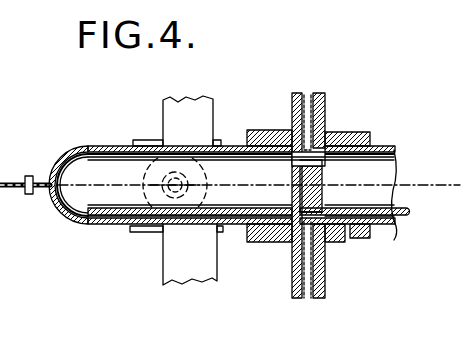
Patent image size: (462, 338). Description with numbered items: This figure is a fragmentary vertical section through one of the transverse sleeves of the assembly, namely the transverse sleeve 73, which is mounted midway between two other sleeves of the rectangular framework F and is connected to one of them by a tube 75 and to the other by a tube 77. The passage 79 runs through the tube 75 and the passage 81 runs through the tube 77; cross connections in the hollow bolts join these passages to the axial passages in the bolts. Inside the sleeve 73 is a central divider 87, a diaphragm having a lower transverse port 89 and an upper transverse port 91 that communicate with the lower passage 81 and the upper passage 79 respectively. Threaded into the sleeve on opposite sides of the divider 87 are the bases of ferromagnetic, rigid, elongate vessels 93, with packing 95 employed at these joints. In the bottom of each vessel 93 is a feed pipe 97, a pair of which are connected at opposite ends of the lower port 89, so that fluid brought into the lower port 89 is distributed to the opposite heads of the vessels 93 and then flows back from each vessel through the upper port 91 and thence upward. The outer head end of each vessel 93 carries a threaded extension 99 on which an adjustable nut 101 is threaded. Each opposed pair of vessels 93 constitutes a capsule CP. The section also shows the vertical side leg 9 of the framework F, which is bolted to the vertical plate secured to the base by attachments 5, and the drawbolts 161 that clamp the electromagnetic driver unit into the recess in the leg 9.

The attachments 5 is at (90, 168).
The vertical side leg 9 is at (186, 105).
The transverse sleeve 73 is at (341, 132).
The tube 75 is at (326, 101).
The tube 77 is at (326, 282).
The passage 79 is at (297, 93).
The passage 81 is at (308, 298).
The central divider 87 is at (300, 189).
The lower transverse port 89 is at (320, 210).
The upper transverse port 91 is at (313, 168).
The vessel 93 is at (101, 146).
The packing 95 is at (284, 135).
The feed pipe 97 is at (104, 214).
The threaded extension 99 is at (20, 186).
The adjustable nut 101 is at (29, 176).
The drawbolt 161 is at (140, 141).
The rectangular framework F is at (160, 121).
The capsule CP is at (240, 145).